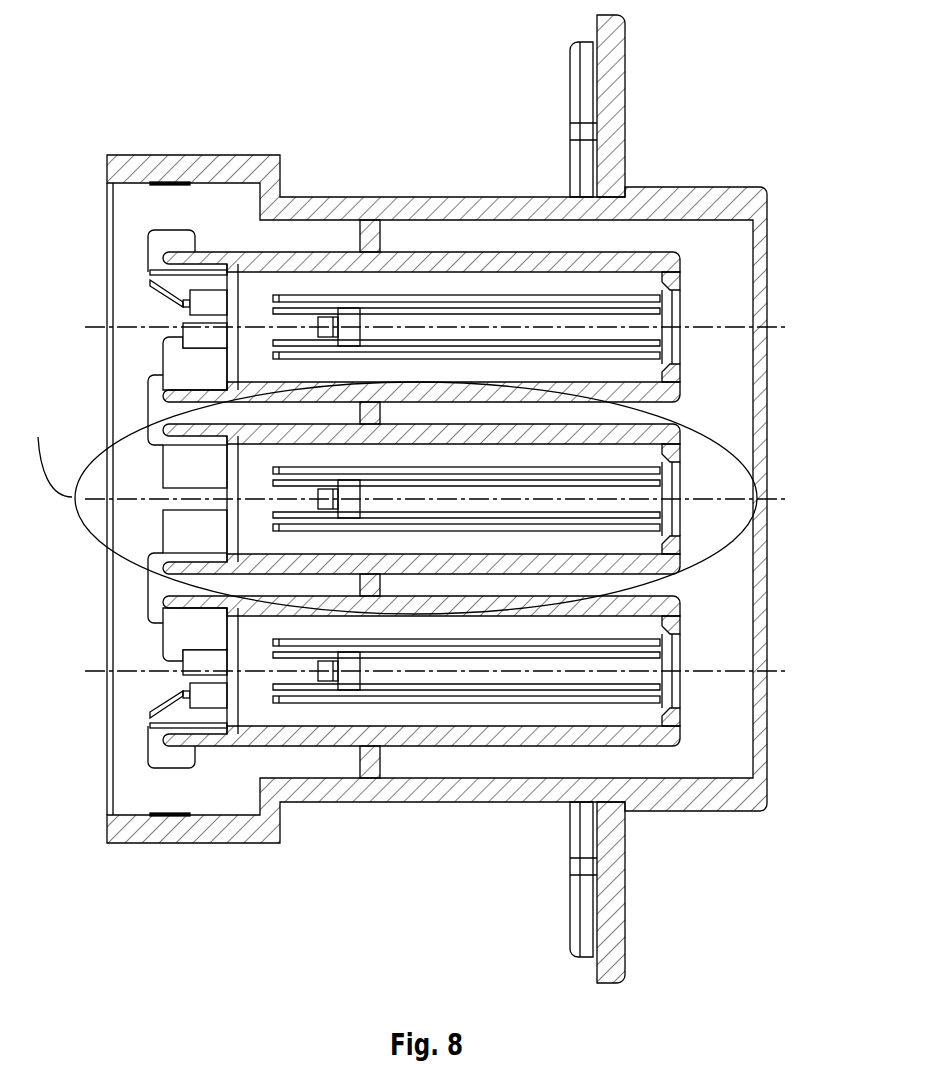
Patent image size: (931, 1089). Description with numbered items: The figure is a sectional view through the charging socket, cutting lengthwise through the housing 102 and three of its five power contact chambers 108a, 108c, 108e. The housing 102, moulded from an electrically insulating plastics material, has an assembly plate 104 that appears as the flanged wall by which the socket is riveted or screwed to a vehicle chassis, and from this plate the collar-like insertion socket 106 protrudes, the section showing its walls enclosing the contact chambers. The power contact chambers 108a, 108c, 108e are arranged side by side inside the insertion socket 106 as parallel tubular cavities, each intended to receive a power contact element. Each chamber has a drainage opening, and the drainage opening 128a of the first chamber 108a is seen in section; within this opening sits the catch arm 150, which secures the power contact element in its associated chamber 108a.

The housing 102 is at (440, 531).
The assembly plate 104 is at (613, 960).
The insertion socket 106 is at (720, 793).
The power contact chamber 108a is at (471, 243).
The power contact chamber 108c is at (670, 442).
The power contact chamber 108e is at (668, 728).
The drainage opening 128a is at (466, 215).
The catch arm 150 is at (310, 235).